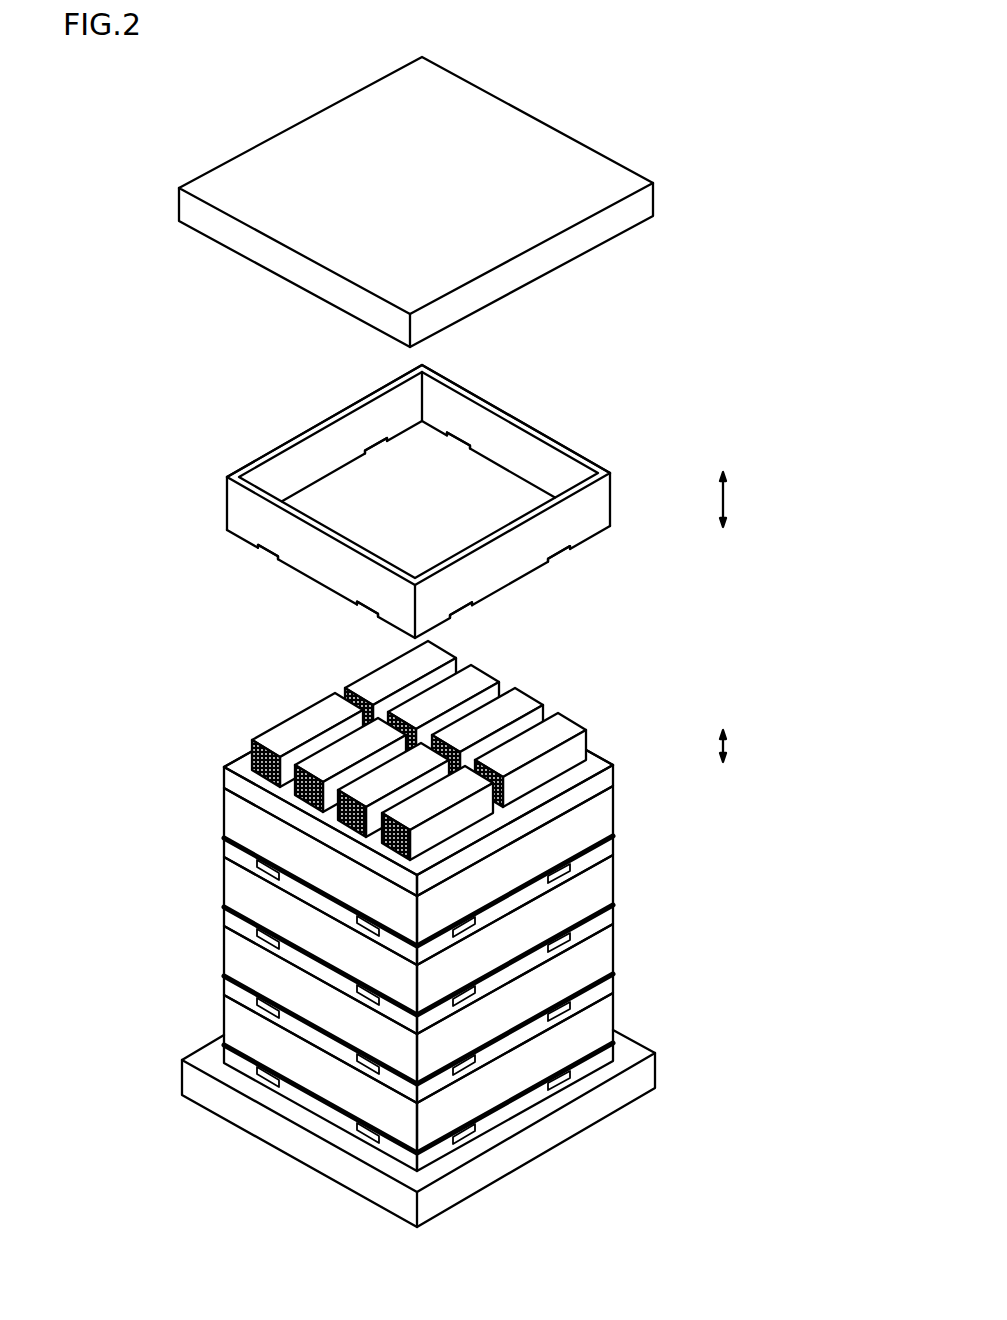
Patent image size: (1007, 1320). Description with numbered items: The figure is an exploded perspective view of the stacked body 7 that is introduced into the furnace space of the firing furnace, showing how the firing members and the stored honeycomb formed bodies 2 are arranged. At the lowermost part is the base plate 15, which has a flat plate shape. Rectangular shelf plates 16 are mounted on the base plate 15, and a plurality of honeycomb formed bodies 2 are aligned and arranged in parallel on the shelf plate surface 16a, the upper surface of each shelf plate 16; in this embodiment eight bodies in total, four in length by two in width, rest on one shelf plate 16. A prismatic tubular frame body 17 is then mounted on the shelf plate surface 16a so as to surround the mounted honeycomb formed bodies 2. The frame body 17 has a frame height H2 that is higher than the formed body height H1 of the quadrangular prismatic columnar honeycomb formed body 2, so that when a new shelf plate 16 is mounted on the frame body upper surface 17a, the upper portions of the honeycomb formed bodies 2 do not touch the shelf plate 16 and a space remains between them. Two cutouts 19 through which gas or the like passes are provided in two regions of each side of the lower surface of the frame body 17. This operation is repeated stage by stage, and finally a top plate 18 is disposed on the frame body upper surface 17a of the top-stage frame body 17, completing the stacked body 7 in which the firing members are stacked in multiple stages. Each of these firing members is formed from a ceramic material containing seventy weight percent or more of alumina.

The stacked body 7 is at (117, 205).
The top plate 18 is at (578, 160).
The frame body 17 is at (243, 515).
The frame body upper surface 17a is at (268, 453).
The cutout 19 is at (378, 440).
The shelf plate 16 is at (225, 780).
The shelf plate surface 16a is at (243, 767).
The honeycomb formed body 2 is at (292, 725).
The base plate 15 is at (642, 1079).
The formed body height H1 is at (723, 745).
The frame height H2 is at (723, 497).